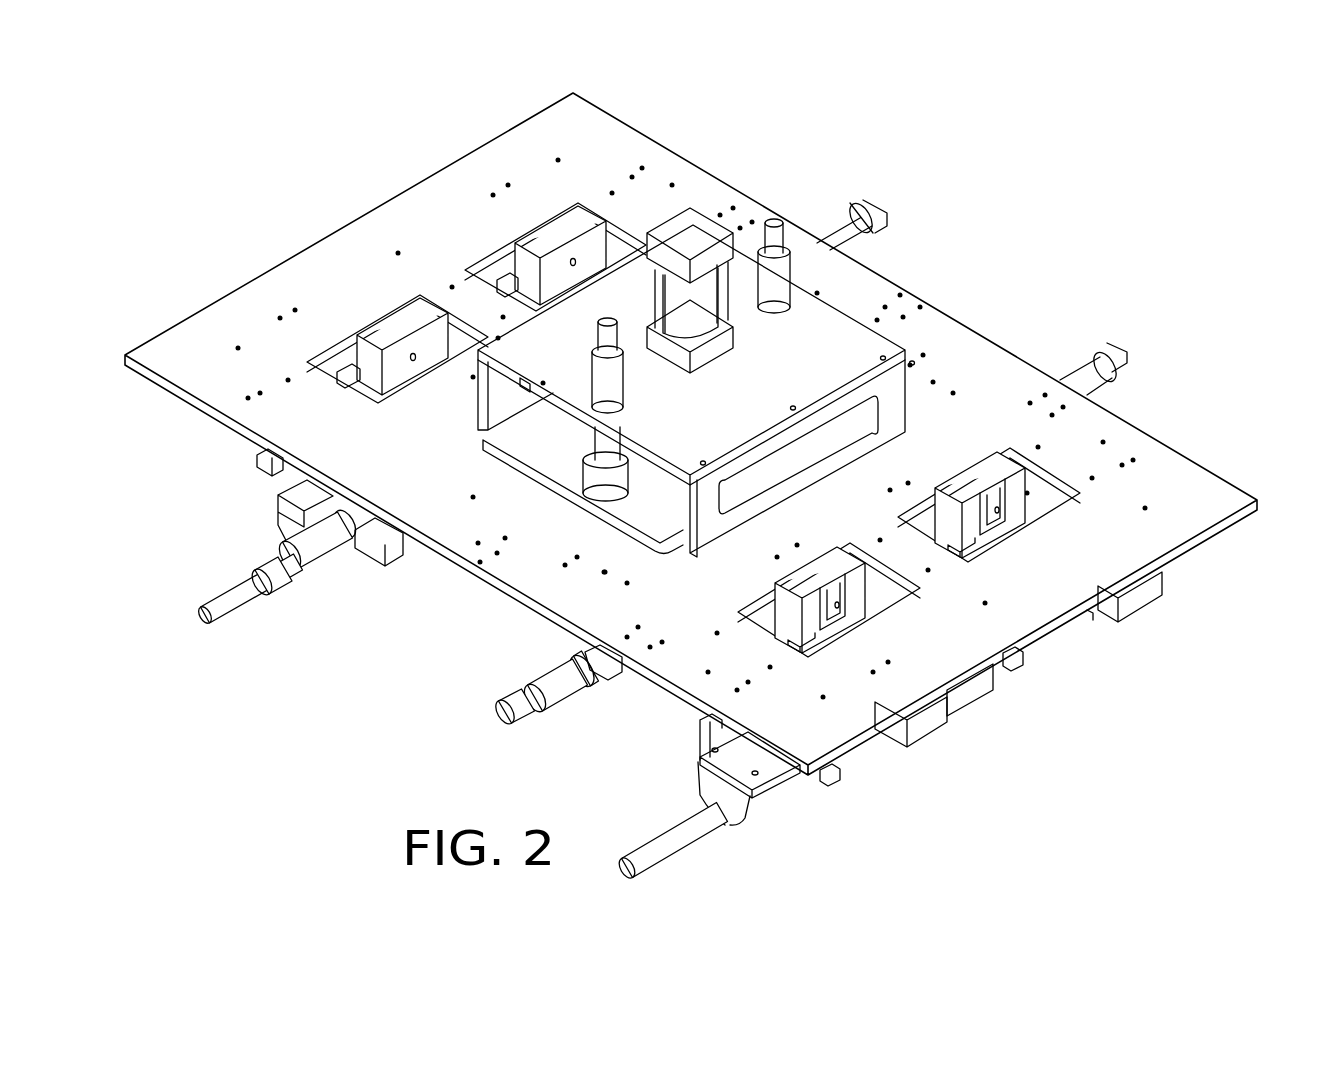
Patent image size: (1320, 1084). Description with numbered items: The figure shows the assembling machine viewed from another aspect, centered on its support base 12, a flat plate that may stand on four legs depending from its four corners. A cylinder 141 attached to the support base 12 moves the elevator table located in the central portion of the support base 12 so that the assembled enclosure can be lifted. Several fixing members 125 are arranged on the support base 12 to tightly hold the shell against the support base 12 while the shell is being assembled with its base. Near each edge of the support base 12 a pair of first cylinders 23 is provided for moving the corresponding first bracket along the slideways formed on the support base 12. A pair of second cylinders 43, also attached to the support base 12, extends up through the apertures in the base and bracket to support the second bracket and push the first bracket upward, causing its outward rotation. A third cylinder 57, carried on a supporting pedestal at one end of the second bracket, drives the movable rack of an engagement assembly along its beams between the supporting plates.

The support base 12 is at (550, 150).
The second cylinders 43 is at (580, 220).
The cylinder 141 is at (697, 227).
The first cylinders 23 is at (1142, 597).
The fixing members 125 is at (550, 690).
The third cylinder 57 is at (683, 828).